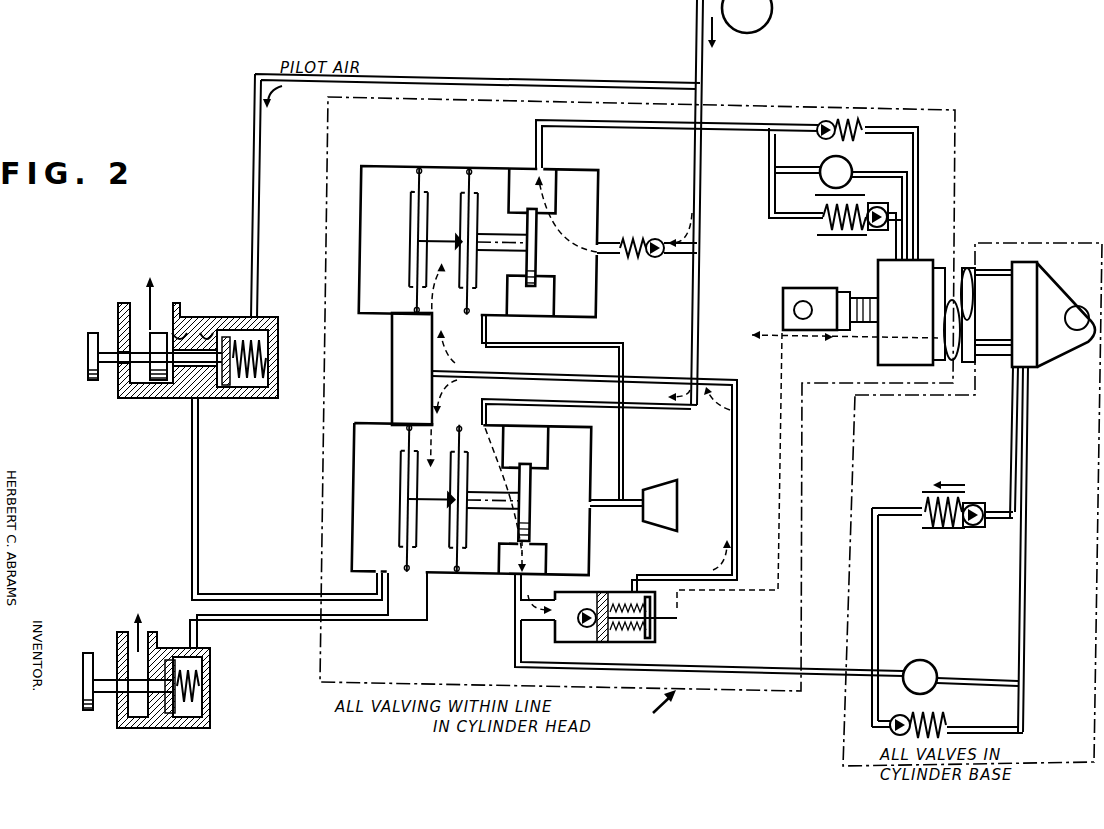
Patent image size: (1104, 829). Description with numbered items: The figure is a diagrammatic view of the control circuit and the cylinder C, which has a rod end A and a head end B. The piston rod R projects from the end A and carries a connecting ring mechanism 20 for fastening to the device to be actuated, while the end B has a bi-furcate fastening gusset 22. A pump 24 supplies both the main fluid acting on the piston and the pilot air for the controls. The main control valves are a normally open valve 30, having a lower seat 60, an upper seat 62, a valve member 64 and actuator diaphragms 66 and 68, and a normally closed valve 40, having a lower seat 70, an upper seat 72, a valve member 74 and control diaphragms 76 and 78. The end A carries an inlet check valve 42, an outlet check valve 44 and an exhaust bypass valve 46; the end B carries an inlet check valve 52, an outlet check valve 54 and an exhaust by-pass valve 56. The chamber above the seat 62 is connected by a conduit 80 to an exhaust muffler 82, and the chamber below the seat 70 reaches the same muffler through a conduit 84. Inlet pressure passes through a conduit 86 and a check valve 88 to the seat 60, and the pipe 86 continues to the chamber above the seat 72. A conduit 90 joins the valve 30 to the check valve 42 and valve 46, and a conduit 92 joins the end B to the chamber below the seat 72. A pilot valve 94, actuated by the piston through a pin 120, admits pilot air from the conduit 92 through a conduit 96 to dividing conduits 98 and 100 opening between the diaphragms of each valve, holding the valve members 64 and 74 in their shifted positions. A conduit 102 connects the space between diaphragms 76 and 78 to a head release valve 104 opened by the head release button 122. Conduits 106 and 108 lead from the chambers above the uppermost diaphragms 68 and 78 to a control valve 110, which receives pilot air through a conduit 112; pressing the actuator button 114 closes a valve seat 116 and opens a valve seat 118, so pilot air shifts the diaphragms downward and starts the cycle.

The connecting ring mechanism 20 is at (798, 292).
The bi-furcate fastening gusset 22 is at (1058, 288).
The pump 24 is at (745, 33).
The normally open valve 30 is at (472, 228).
The normally closed valve 40 is at (471, 501).
The inlet check valve 42 is at (828, 120).
The outlet check valve 44 is at (877, 228).
The exhaust bypass valve 46 is at (853, 182).
The inlet check valve 52 is at (905, 716).
The outlet check valve 54 is at (976, 504).
The exhaust by-pass valve 56 is at (938, 673).
The lower seat 60 is at (548, 275).
The upper seat 62 is at (530, 288).
The valve member 64 is at (537, 252).
The actuator diaphragm 66 is at (473, 259).
The actuator diaphragm 68 is at (419, 236).
The lower seat 70 is at (538, 470).
The upper seat 72 is at (506, 470).
The valve member 74 is at (528, 510).
The control diaphragm 76 is at (462, 486).
The control diaphragm 78 is at (409, 508).
The conduit 80 is at (587, 342).
The exhaust muffler 82 is at (664, 515).
The conduit 84 is at (612, 506).
The conduit 86 is at (697, 168).
The check valve 88 is at (653, 238).
The conduit 90 is at (670, 127).
The conduit 92 is at (518, 637).
The pilot valve 94 is at (587, 609).
The conduit 96 is at (737, 430).
The conduit 98 is at (456, 346).
The conduit 100 is at (565, 402).
The conduit 102 is at (380, 627).
The head release valve 104 is at (177, 672).
The conduit 106 is at (392, 354).
The conduit 108 is at (200, 553).
The control valve 110 is at (233, 397).
The conduit 112 is at (533, 84).
The actuator button 114 is at (88, 337).
The valve seat 116 is at (180, 335).
The valve seat 118 is at (200, 337).
The pin 120 is at (665, 620).
The head release button 122 is at (90, 710).
The rod end A is at (895, 338).
The head end B is at (1028, 358).
The cylinder C is at (1000, 347).
The piston rod R is at (870, 293).